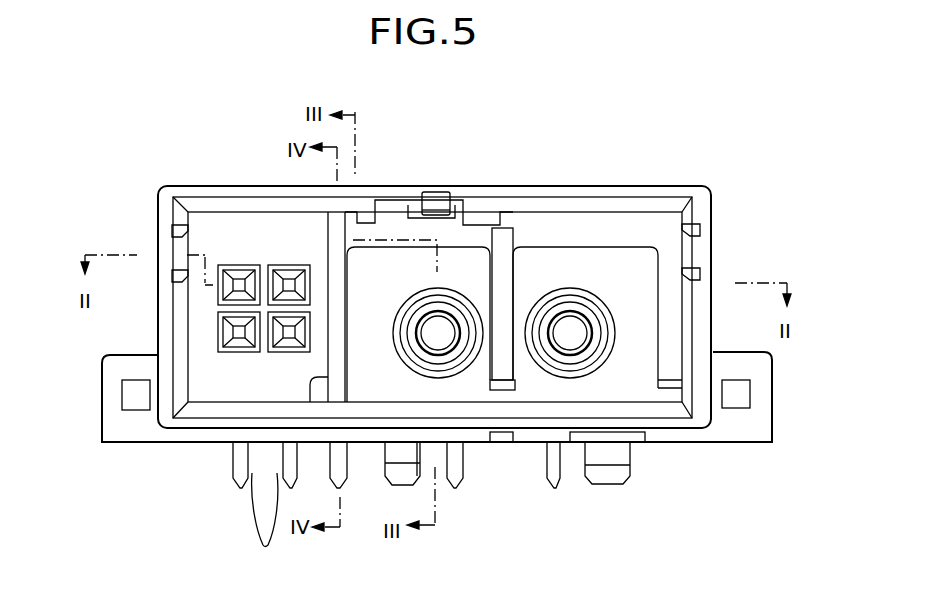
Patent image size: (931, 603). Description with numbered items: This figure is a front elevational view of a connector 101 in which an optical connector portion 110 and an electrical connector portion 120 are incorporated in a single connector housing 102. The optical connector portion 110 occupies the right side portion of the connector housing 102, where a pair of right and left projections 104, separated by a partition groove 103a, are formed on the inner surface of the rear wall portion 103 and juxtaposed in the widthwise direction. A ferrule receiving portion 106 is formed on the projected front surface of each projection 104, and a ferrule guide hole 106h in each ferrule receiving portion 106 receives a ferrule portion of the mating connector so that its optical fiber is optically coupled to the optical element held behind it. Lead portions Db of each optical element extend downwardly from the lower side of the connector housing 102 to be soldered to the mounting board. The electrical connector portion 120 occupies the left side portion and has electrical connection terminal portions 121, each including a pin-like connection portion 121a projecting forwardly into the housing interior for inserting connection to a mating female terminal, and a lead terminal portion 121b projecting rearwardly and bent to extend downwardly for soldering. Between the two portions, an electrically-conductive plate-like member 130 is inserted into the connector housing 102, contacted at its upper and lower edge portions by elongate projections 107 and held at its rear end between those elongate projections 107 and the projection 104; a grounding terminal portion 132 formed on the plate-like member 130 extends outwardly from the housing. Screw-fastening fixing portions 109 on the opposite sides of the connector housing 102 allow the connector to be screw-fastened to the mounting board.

The connector 101 is at (412, 163).
The connector housing 102 is at (576, 186).
The rear wall portion 103 is at (657, 212).
The partition groove 103a is at (503, 390).
The projection 104 is at (462, 255).
The ferrule receiving portion 106 is at (395, 314).
The ferrule guide hole 106h is at (424, 315).
The elongate projection 107 is at (327, 240).
The screw-fastening fixing portion 109 is at (102, 400).
The optical connector portion 110 is at (545, 212).
The electrical connector portion 120 is at (176, 186).
The electrical connection terminal portion 121 is at (287, 283).
The connection portion 121a is at (275, 342).
The lead terminal portion 121b is at (269, 526).
The electrically-conductive plate-like member 130 is at (347, 338).
The grounding terminal portion 132 is at (352, 482).
The lead portion Db is at (420, 481).